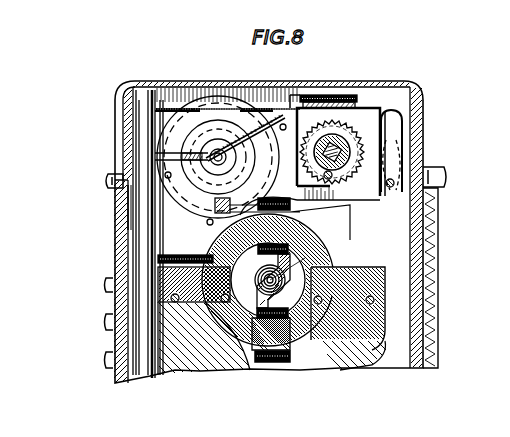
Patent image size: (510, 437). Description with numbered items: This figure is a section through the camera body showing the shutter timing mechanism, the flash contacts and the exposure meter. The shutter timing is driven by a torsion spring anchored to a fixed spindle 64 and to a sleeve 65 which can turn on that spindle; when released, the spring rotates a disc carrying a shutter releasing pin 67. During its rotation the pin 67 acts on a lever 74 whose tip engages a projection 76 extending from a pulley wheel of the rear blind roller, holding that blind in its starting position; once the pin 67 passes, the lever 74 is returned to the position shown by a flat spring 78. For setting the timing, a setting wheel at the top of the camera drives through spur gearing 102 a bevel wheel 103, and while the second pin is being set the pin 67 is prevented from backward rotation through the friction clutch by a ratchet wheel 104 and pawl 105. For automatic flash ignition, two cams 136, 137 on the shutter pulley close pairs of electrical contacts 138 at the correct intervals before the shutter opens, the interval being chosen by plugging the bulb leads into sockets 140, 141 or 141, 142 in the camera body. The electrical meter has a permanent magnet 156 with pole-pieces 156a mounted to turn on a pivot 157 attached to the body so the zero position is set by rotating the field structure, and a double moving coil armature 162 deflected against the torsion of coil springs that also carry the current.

The fixed spindle 64 is at (372, 133).
The sleeve 65 is at (384, 108).
The shutter releasing pin 67 is at (242, 160).
The lever 74 is at (338, 205).
The projection 76 is at (115, 222).
The flat spring 78 is at (398, 108).
The spur gearing 102 is at (311, 95).
The bevel wheel 103 is at (290, 94).
The ratchet wheel 104 is at (342, 103).
The pawl 105 is at (352, 152).
The cam 136 is at (113, 192).
The cam 137 is at (113, 209).
The electrical contacts 138 is at (120, 162).
The socket 140 is at (108, 285).
The socket 141 is at (108, 323).
The socket 142 is at (108, 360).
The permanent magnet 156 is at (378, 304).
The pole-pieces 156a is at (294, 232).
The pivot 157 is at (246, 335).
The double moving coil armature 162 is at (232, 258).